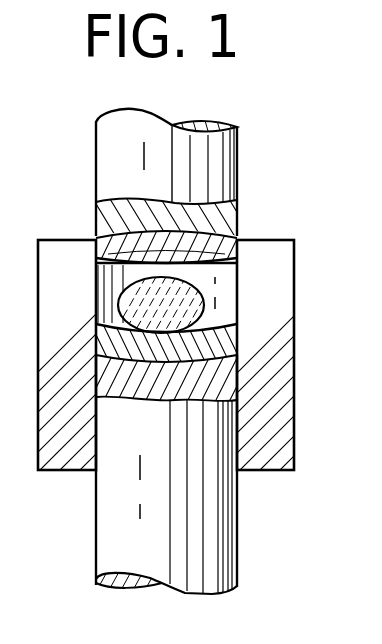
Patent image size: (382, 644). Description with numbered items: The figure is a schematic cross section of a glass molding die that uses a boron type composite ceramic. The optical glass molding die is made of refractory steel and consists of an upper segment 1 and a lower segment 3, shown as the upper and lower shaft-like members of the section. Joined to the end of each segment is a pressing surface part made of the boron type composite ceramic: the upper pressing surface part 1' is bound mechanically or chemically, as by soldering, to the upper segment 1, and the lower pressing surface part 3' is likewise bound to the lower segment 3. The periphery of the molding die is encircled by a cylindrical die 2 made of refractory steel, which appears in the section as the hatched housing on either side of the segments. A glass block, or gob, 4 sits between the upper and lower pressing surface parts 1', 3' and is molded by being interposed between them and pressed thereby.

The upper segment 1 is at (183, 174).
The upper pressing surface part 1' is at (151, 227).
The cylindrical die 2 is at (283, 295).
The lower segment 3 is at (177, 471).
The lower pressing surface part 3' is at (184, 346).
The glass block (gob) 4 is at (123, 299).